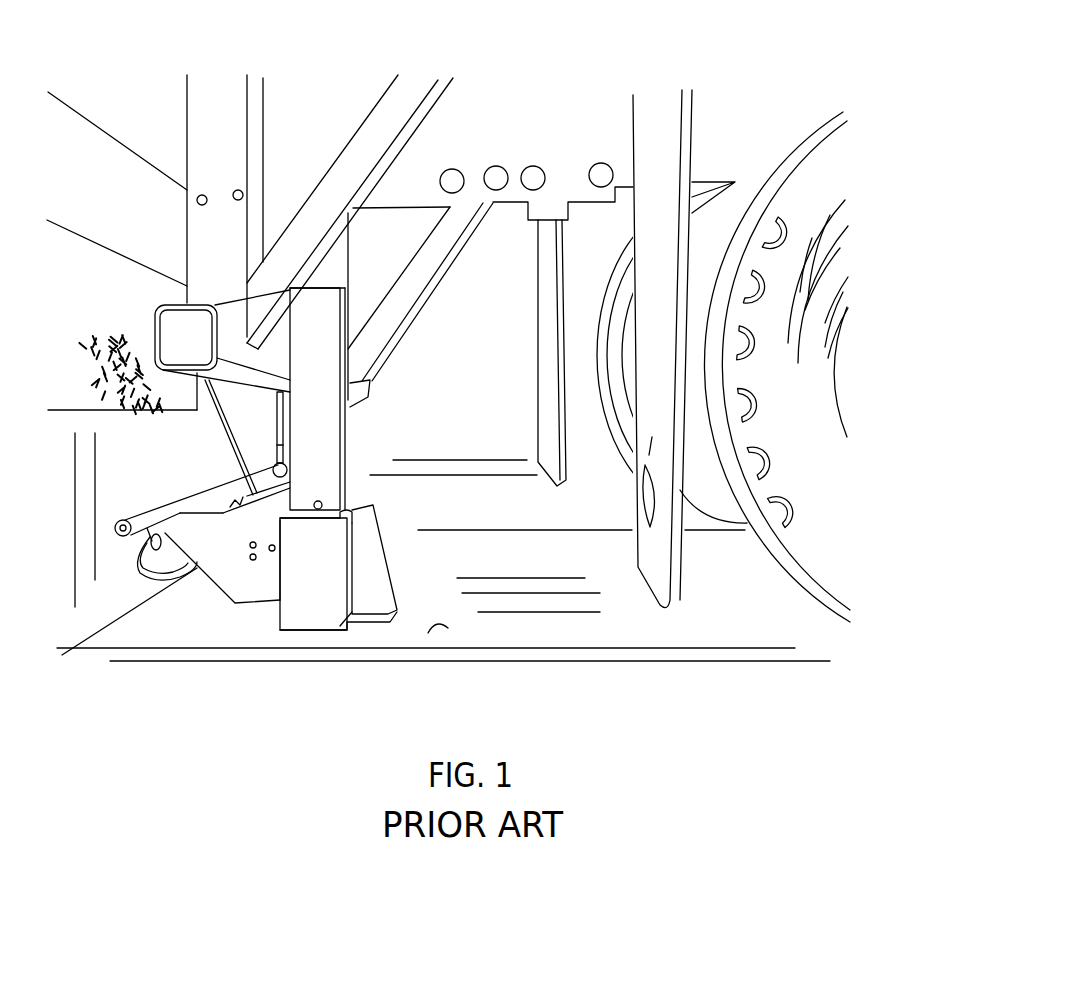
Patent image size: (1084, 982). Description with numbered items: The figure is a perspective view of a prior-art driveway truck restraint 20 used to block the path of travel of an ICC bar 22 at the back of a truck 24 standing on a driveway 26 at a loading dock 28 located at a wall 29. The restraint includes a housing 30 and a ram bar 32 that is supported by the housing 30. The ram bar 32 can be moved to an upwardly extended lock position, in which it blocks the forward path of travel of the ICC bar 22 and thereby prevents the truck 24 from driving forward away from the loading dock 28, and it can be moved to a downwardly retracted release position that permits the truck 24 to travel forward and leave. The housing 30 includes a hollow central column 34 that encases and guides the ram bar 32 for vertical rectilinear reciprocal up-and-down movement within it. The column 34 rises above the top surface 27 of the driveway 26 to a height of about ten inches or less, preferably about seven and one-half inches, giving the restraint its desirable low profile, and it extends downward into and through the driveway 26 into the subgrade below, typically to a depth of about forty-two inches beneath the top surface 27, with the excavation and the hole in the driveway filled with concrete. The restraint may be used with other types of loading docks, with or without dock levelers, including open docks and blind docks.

The driveway truck restraint 20 is at (400, 566).
The ICC bar 22 is at (203, 373).
The truck 24 is at (750, 548).
The driveway 26 is at (590, 572).
The top surface of the driveway 27 is at (454, 637).
The loading dock 28 is at (64, 392).
The wall 29 is at (116, 598).
The housing 30 is at (353, 523).
The ram bar 32 is at (313, 400).
The hollow central column 34 is at (296, 606).